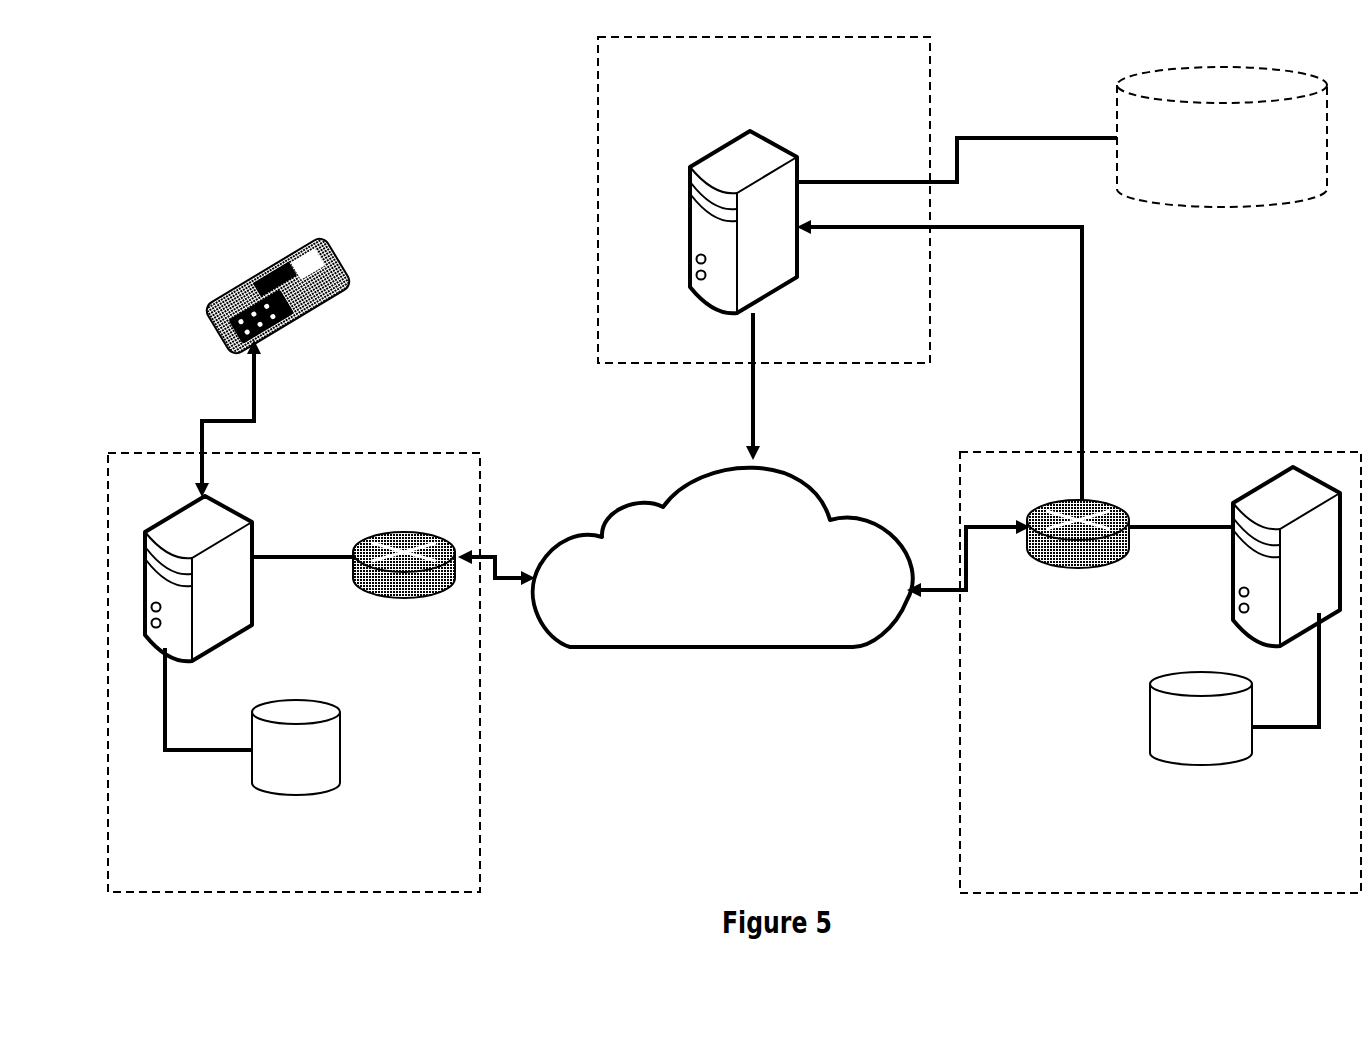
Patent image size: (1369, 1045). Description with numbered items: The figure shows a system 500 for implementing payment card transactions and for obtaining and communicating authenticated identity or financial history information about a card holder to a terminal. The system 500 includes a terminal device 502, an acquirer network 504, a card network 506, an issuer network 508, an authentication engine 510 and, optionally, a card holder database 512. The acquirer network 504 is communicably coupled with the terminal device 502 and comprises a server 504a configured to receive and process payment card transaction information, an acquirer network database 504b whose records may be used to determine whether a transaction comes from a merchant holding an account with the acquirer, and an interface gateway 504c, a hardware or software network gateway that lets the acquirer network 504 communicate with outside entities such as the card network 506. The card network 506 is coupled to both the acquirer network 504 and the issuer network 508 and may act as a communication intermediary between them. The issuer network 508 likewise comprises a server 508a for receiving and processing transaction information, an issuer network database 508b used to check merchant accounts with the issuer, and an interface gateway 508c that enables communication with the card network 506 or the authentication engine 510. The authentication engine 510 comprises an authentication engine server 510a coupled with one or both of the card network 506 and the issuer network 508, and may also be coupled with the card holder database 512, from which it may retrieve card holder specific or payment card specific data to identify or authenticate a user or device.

The system 500 is at (257, 95).
The terminal device 502 is at (217, 325).
The acquirer network 504 is at (373, 452).
The server 504a is at (255, 598).
The acquirer network database 504b is at (340, 762).
The interface gateway 504c is at (383, 540).
The card network 506 is at (830, 512).
The issuer network 508 is at (1250, 452).
The server 508a is at (1232, 587).
The issuer network database 508b is at (1150, 728).
The interface gateway 508c is at (1111, 511).
The authentication engine 510 is at (931, 88).
The authentication engine server 510a is at (690, 290).
The card holder database 512 is at (1283, 203).